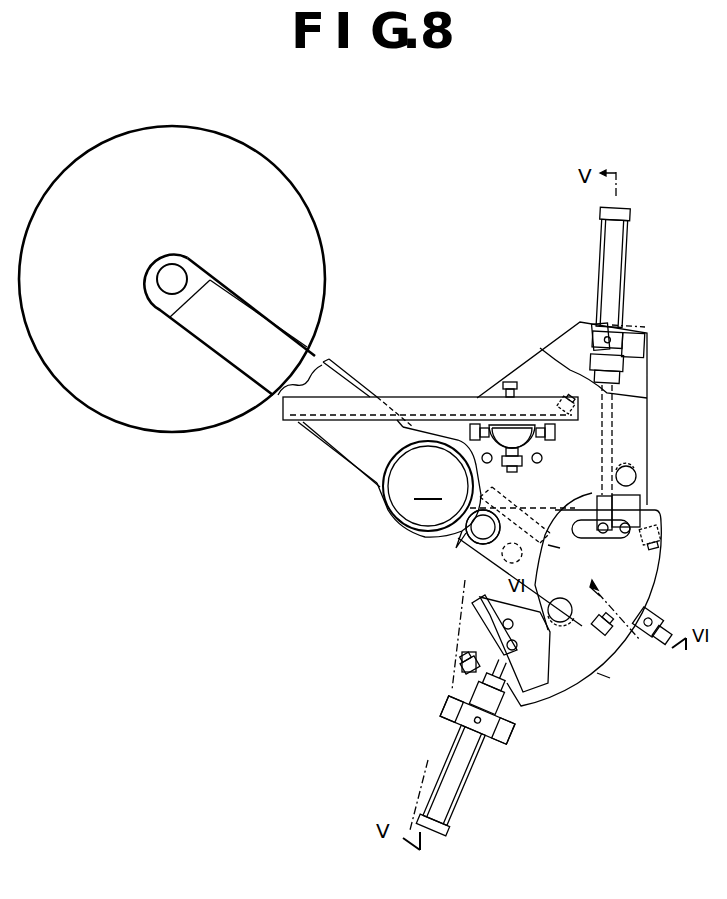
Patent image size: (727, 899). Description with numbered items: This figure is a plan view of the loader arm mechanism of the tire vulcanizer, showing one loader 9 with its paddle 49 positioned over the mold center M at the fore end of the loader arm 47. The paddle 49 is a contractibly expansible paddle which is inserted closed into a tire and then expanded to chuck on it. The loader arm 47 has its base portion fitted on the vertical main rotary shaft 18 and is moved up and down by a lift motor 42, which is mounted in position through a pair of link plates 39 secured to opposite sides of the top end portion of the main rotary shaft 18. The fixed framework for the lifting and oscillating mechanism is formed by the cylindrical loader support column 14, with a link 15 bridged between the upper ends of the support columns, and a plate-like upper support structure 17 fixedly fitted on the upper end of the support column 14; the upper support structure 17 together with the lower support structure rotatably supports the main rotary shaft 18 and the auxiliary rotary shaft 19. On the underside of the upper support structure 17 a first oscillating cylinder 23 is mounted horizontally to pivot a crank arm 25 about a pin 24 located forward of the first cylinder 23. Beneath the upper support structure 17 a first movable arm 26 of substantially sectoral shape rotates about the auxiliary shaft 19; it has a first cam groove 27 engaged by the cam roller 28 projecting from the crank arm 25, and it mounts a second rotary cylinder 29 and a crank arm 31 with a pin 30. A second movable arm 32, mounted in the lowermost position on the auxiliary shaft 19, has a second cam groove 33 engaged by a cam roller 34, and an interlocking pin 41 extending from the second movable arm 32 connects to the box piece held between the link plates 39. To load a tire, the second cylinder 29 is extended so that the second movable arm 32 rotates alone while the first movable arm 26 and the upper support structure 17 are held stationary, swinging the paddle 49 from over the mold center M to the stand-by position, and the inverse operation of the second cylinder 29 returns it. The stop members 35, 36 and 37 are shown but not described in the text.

The paddle 49 is at (325, 243).
The mold center M is at (172, 279).
The loader arm 47 is at (353, 383).
The link 15 is at (440, 397).
The lift motor 42 is at (429, 482).
The main rotary shaft 18 is at (470, 540).
The auxiliary rotary shaft 19 is at (483, 527).
The loader 9 is at (454, 539).
The upper support structure 17 is at (520, 382).
The loader support column 14 is at (540, 445).
The link plate 39 is at (535, 508).
The stopper 35 is at (565, 398).
The first oscillating cylinder 23 is at (612, 254).
The pin 24 is at (628, 475).
The crank arm 25 is at (635, 506).
The first cam groove 27 is at (585, 540).
The cam roller 28 is at (627, 542).
The interlocking pin 41 is at (565, 548).
The crank arm 31 is at (553, 640).
The pin 30 is at (565, 622).
The second cam groove 33 is at (487, 605).
The cam roller 34 is at (500, 628).
The second movable arm 32 is at (470, 652).
The second rotary cylinder 29 is at (458, 803).
The stop block 36 is at (655, 612).
The bolt 37 is at (660, 640).
The first movable arm 26 is at (603, 672).